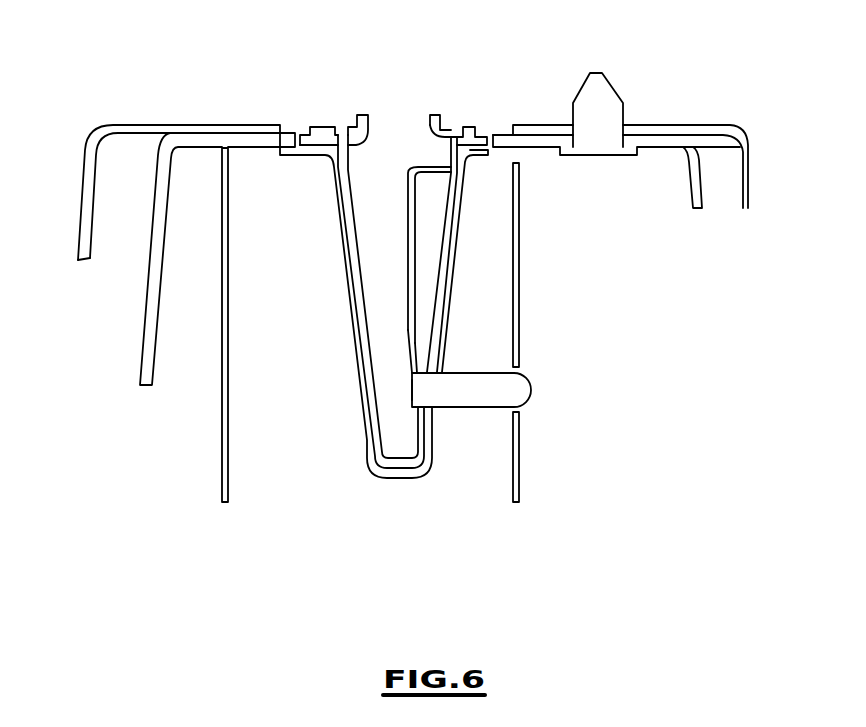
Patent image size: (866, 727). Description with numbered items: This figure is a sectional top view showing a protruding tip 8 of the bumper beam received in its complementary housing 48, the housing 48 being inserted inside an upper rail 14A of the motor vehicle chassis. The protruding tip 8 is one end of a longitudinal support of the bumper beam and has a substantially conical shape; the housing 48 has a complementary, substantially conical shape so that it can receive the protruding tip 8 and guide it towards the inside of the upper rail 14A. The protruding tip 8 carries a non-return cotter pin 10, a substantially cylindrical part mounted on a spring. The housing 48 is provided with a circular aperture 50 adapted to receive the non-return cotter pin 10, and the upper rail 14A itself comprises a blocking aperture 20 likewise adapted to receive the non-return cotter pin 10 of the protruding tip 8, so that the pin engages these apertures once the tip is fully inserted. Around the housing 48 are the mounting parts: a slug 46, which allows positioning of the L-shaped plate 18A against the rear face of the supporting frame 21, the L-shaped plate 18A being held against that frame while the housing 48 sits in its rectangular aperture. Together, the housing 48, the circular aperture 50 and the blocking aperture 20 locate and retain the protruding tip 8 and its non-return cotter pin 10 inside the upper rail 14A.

The protruding tip 8 is at (428, 117).
The non-return cotter pin 10 is at (513, 390).
The upper rail 14A is at (223, 441).
The L-shaped plate 18A is at (699, 218).
The blocking aperture 20 is at (523, 412).
The supporting frame 21 is at (720, 130).
The slug 46 is at (598, 95).
The housing 48 is at (450, 297).
The circular aperture 50 is at (430, 390).